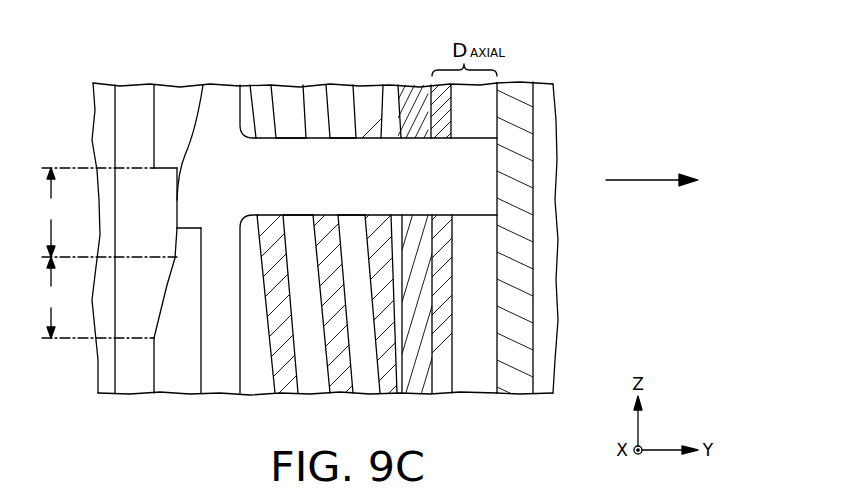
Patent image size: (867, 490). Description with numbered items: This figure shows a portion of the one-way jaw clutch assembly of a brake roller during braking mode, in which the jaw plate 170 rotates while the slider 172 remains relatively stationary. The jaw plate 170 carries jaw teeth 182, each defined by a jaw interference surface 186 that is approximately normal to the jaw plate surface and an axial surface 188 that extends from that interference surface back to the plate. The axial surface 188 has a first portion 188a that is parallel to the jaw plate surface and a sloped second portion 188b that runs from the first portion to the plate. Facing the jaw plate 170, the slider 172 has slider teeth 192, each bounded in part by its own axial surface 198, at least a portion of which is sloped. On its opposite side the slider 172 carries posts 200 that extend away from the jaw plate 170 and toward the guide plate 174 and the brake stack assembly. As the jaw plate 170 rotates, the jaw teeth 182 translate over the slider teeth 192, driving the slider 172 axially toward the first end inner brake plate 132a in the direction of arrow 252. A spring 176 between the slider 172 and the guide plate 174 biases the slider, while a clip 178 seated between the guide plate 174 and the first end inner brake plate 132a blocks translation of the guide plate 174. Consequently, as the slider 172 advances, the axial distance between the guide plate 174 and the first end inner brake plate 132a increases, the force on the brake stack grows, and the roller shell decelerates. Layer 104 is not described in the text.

The stator lamination stack / hatched segments 104 is at (340, 102).
The first end inner brake plate 132a is at (512, 310).
The jaw plate 170 is at (132, 383).
The slider 172 is at (217, 383).
The guide plate 174 is at (411, 103).
The spring 176 is at (308, 93).
The clip 178 is at (442, 363).
The jaw teeth 182 is at (177, 227).
The jaw interference surface 186 is at (160, 168).
The axial surface 188 is at (167, 285).
The first portion of axial surface 188a is at (107, 212).
The second portion of axial surface 188b is at (95, 297).
The slider teeth 192 is at (195, 191).
The axial surface 198 is at (187, 148).
The posts 200 is at (332, 183).
The arrow 252 is at (634, 177).